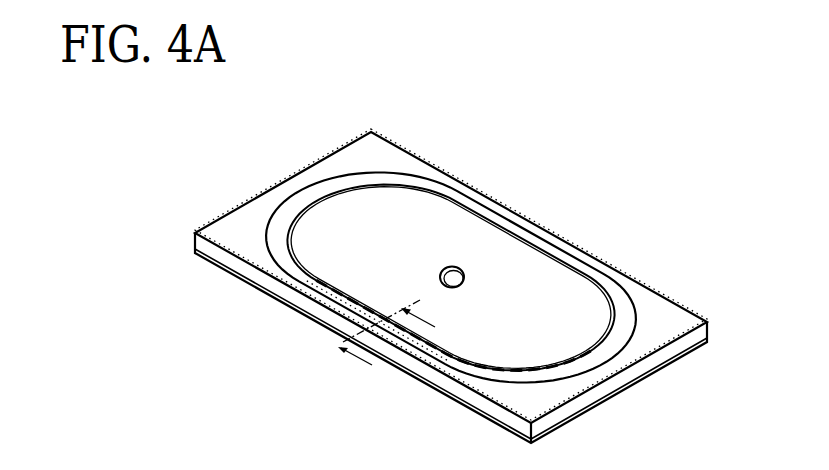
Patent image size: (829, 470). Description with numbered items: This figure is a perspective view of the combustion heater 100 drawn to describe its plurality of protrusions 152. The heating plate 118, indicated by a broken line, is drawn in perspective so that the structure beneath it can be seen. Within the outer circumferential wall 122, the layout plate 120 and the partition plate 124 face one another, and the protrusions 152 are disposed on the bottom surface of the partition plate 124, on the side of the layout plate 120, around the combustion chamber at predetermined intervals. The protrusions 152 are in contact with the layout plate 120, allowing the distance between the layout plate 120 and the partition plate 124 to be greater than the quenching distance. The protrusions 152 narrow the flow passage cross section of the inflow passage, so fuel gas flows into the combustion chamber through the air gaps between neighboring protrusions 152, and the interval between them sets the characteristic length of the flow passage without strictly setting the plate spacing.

The combustion heater 100 is at (451, 277).
The heating plate 118 is at (658, 303).
The layout plate 120 is at (603, 407).
The outer circumferential wall 122 is at (415, 162).
The partition plate 124 is at (347, 214).
The protrusions 152 is at (515, 368).